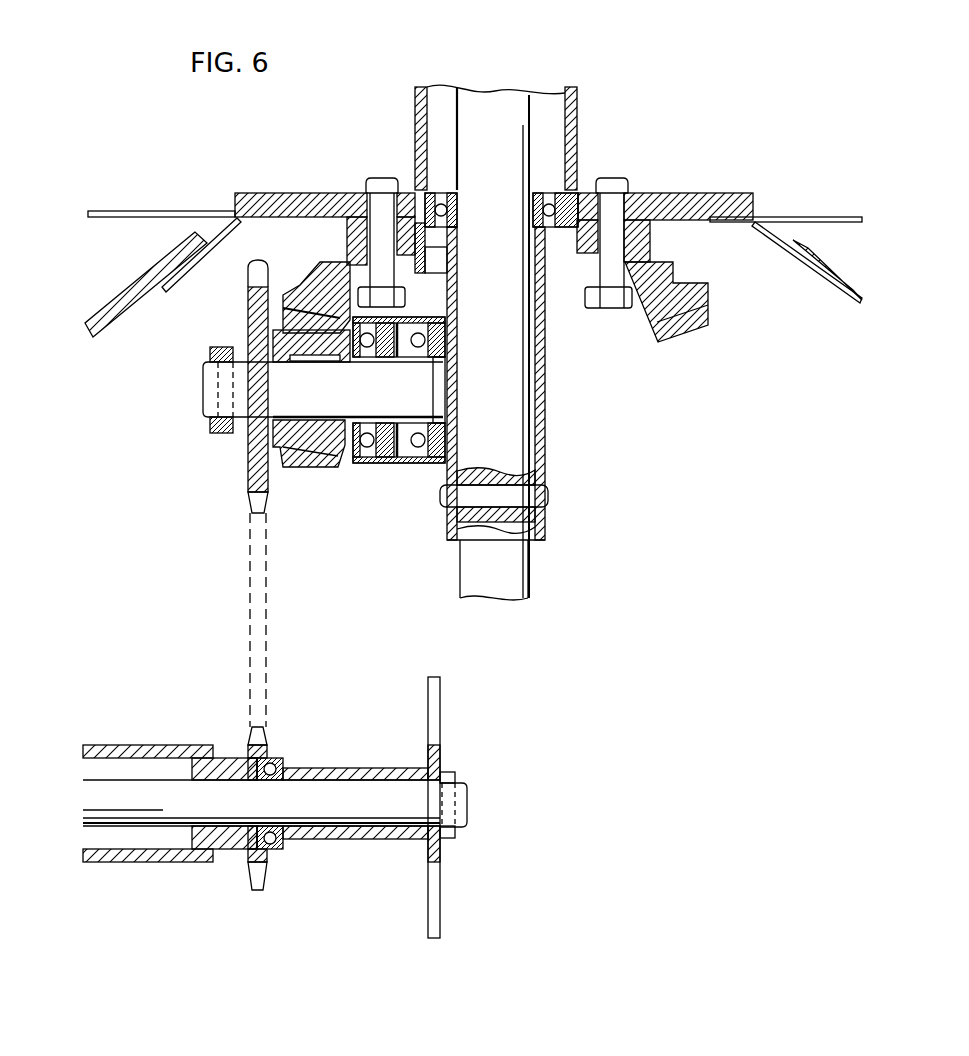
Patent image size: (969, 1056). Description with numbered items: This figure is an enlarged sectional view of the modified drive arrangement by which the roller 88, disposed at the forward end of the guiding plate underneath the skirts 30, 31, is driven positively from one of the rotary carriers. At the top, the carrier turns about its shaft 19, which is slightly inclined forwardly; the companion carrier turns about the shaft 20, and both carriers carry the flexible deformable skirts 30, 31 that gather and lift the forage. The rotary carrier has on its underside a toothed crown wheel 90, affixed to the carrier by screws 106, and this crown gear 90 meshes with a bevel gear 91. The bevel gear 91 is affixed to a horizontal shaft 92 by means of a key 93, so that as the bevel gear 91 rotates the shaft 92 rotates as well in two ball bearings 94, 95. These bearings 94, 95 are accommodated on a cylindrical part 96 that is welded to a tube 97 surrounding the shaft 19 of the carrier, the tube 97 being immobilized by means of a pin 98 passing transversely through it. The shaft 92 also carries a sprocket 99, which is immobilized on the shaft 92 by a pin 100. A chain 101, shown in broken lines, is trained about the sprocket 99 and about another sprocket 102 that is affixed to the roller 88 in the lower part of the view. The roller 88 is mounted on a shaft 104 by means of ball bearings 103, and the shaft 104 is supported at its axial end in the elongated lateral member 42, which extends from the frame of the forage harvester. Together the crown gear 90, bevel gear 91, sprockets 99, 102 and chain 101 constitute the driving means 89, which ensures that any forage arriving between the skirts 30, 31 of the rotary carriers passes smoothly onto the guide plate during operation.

The shaft 19 is at (530, 90).
The shaft 20 is at (507, 113).
The flexible deformable skirt 30 is at (806, 296).
The flexible deformable skirt 31 is at (822, 280).
The elongated lateral member 42 is at (433, 878).
The roller 88 is at (141, 745).
The driving means 89 is at (290, 388).
The toothed crown wheel 90 is at (684, 325).
The bevel gear 91 is at (290, 338).
The shaft 92 is at (258, 389).
The key 93 is at (312, 362).
The ball bearing 94 is at (370, 460).
The ball bearing 95 is at (418, 463).
The cylindrical part 96 is at (403, 462).
The tube 97 is at (538, 452).
The pin 98 is at (525, 498).
The sprocket 99 is at (253, 486).
The pin 100 is at (232, 424).
The chain 101 is at (262, 571).
The sprocket 102 is at (262, 733).
The ball bearings 103 is at (281, 763).
The shaft 104 is at (432, 800).
The screws 106 is at (376, 178).